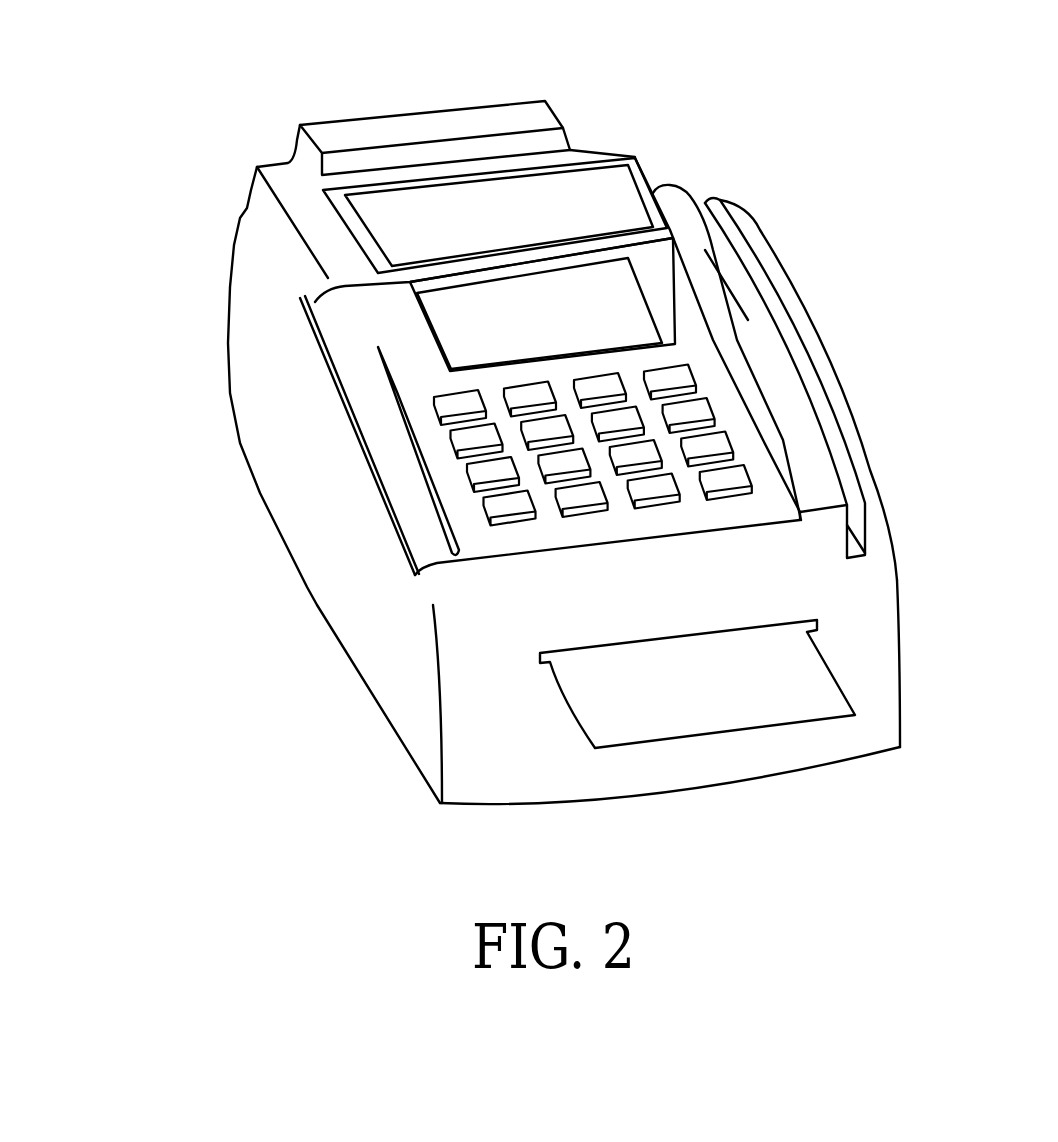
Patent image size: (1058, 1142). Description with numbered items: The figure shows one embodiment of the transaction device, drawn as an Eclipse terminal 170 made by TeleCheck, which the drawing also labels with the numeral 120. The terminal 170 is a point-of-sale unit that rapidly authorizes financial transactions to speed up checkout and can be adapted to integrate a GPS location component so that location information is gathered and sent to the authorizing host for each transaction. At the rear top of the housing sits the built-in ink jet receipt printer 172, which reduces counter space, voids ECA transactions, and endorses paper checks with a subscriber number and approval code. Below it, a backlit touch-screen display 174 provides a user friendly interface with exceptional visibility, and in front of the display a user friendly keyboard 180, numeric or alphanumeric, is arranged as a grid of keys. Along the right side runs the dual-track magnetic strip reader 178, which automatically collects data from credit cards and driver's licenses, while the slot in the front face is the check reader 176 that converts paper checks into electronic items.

The point-of-sale terminal 120 is at (187, 73).
The Eclipse terminal 170 is at (516, 431).
The ink jet receipt printer 172 is at (413, 112).
The backlit touch-screen display 174 is at (473, 330).
The check reader 176 is at (708, 653).
The dual-track magnetic strip reader 178 is at (808, 277).
The keyboard 180 is at (645, 455).